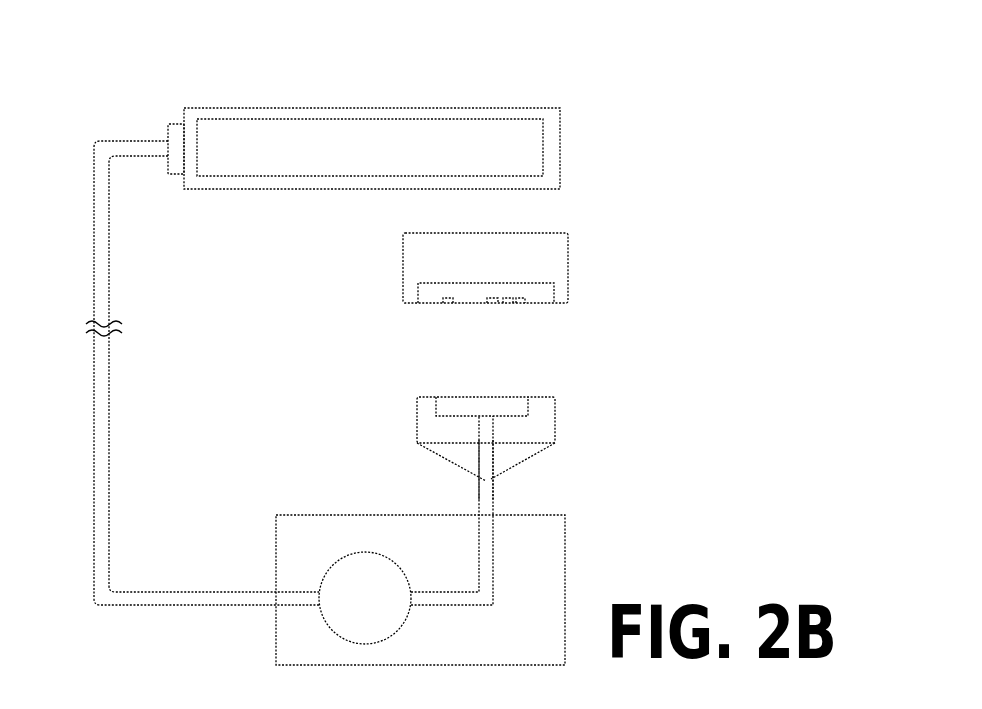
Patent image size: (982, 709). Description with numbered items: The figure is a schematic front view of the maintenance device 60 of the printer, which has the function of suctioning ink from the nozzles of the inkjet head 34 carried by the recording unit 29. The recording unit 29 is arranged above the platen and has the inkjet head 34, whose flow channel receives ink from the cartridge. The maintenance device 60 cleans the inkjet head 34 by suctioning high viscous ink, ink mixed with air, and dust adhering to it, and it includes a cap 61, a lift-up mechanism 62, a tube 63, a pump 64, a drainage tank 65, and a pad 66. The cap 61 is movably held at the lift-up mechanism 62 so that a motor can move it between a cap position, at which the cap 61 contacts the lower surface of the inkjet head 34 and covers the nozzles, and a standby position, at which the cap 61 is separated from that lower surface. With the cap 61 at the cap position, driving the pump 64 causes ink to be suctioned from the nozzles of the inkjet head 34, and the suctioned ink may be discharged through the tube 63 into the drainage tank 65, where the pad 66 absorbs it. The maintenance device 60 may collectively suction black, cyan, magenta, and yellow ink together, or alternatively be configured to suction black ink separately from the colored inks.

The recording unit 29 is at (578, 229).
The inkjet head 34 is at (570, 292).
The maintenance device 60 is at (702, 209).
The cap 61 is at (555, 420).
The lift-up mechanism 62 is at (565, 578).
The tube 63 is at (479, 497).
The pump 64 is at (365, 552).
The drainage tank 65 is at (265, 190).
The pad 66 is at (358, 110).